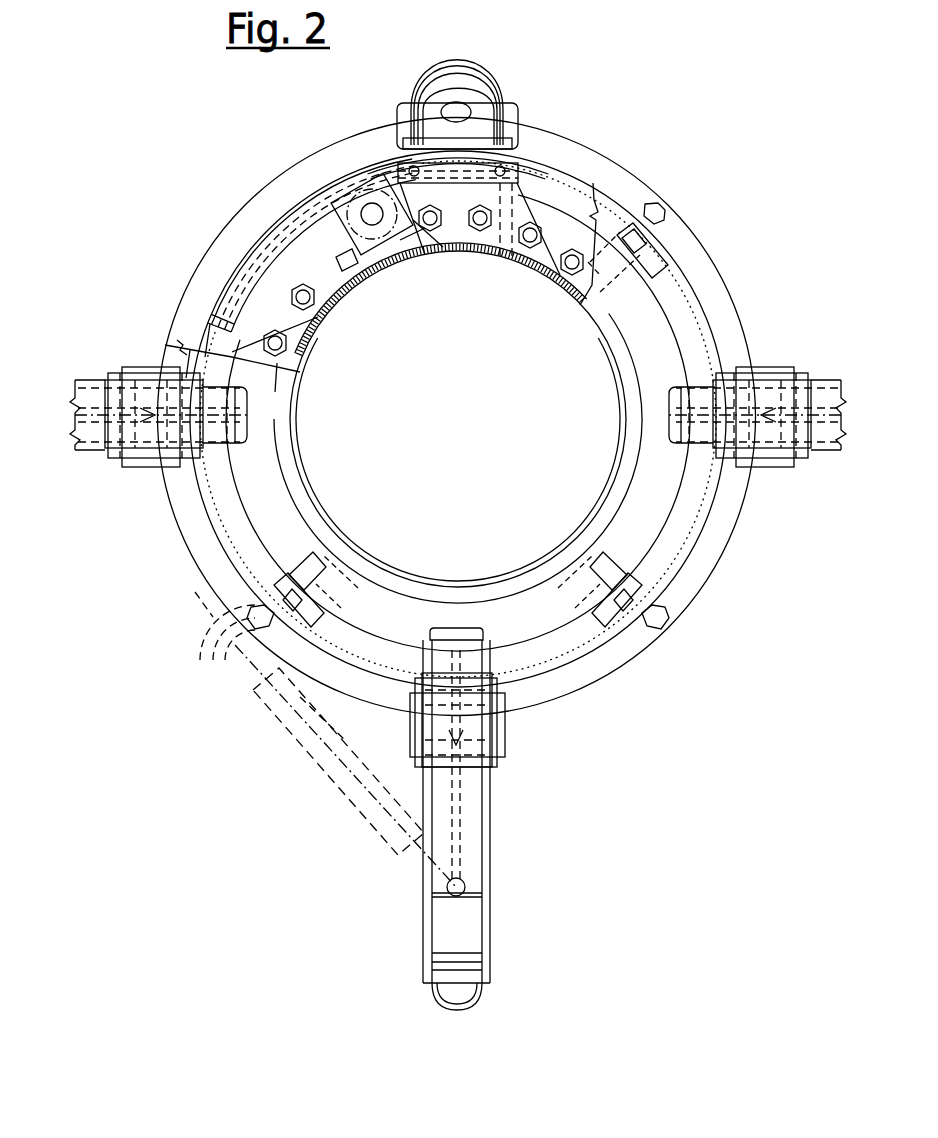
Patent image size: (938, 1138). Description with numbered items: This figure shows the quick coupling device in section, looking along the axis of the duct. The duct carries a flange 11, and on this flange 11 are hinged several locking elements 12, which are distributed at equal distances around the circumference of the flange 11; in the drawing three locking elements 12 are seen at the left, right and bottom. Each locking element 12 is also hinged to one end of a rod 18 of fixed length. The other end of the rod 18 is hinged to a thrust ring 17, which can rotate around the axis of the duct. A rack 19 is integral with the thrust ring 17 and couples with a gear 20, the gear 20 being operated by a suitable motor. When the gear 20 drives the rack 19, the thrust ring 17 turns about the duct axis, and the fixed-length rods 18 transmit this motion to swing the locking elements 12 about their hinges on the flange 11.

The flange 11 is at (535, 617).
The locking element 12 is at (90, 433).
The thrust ring 17 is at (562, 148).
The rod 18 is at (328, 762).
The rack 19 is at (293, 237).
The gear 20 is at (372, 228).